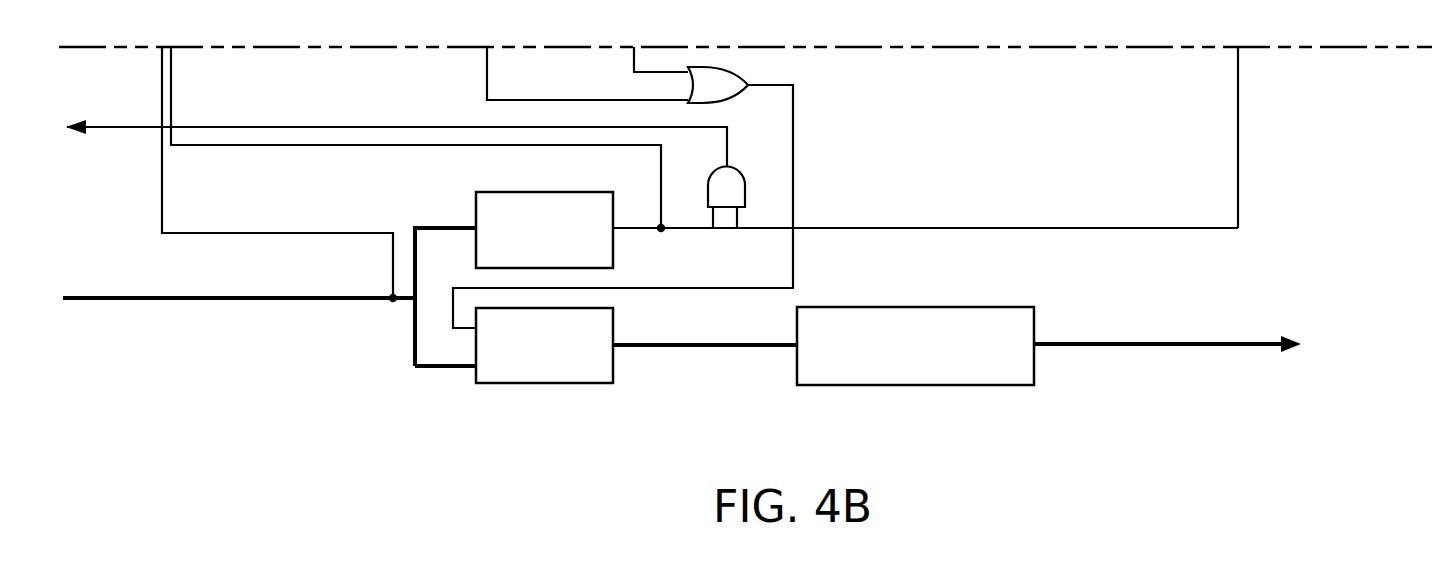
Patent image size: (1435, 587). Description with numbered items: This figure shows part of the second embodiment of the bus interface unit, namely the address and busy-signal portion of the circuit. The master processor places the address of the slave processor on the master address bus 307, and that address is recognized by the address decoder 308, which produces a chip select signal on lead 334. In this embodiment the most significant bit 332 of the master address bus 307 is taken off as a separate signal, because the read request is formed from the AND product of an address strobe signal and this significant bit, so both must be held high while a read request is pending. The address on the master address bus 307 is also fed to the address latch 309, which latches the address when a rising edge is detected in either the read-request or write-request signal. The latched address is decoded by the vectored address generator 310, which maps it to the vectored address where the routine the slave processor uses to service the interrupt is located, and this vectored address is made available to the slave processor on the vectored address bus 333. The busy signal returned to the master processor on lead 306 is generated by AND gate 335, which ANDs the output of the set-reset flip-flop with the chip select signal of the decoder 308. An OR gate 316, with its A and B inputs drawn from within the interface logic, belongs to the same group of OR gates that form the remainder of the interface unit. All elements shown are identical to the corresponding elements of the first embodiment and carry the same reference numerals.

The busy lead 306 is at (138, 130).
The master address bus 307 is at (290, 301).
The address decoder 308 is at (537, 191).
The address latch 309 is at (537, 384).
The vectored address generator 310 is at (927, 307).
The OR gate 316 is at (723, 105).
The most significant bit 332 is at (163, 173).
The vectored address bus 333 is at (1222, 348).
The chip select lead 334 is at (352, 147).
The AND gate 335 is at (759, 153).